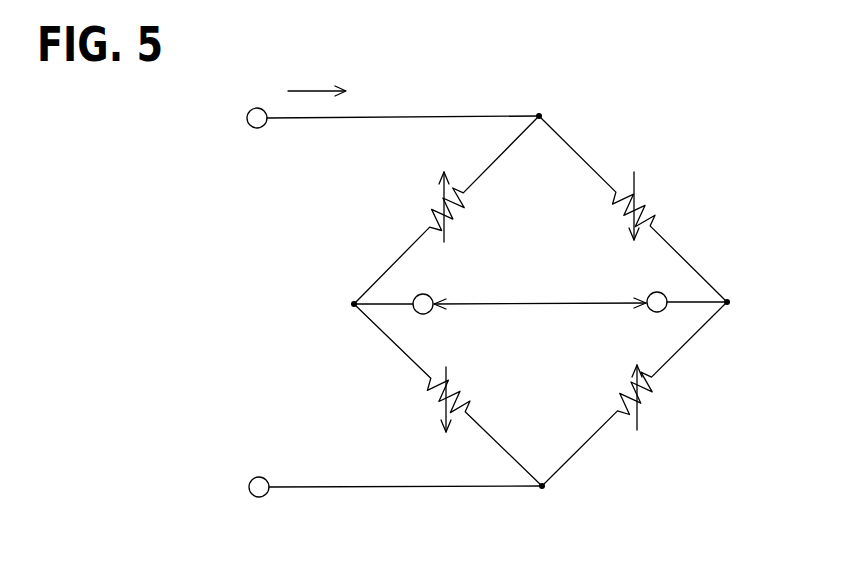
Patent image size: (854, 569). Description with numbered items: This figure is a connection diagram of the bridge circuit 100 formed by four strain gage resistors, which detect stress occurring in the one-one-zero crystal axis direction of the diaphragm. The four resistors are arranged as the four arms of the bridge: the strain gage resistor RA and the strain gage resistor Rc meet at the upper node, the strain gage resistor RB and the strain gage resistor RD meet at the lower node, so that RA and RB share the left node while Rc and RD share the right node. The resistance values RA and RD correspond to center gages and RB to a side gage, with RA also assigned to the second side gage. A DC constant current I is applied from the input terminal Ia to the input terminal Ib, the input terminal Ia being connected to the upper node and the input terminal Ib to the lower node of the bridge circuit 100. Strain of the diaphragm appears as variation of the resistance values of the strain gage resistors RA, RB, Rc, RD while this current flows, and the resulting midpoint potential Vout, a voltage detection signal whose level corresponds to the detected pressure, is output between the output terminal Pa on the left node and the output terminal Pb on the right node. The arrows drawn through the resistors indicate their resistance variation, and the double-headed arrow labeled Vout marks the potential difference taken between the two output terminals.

The bridge circuit 100 is at (612, 54).
The input terminal Ia is at (250, 110).
The input terminal Ib is at (252, 495).
The DC constant current I is at (317, 80).
The strain gage resistor RA is at (432, 206).
The strain gage resistor RB is at (440, 404).
The strain gage resistor Rc is at (642, 196).
The strain gage resistor RD is at (648, 398).
The output terminal Pa is at (429, 294).
The output terminal Pb is at (651, 292).
The midpoint potential Vout is at (540, 294).